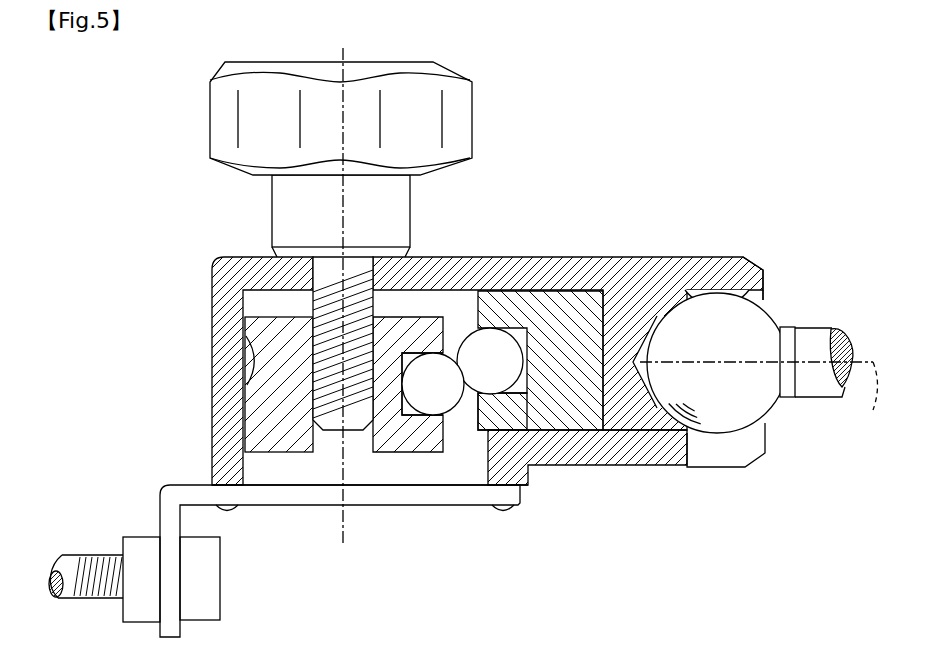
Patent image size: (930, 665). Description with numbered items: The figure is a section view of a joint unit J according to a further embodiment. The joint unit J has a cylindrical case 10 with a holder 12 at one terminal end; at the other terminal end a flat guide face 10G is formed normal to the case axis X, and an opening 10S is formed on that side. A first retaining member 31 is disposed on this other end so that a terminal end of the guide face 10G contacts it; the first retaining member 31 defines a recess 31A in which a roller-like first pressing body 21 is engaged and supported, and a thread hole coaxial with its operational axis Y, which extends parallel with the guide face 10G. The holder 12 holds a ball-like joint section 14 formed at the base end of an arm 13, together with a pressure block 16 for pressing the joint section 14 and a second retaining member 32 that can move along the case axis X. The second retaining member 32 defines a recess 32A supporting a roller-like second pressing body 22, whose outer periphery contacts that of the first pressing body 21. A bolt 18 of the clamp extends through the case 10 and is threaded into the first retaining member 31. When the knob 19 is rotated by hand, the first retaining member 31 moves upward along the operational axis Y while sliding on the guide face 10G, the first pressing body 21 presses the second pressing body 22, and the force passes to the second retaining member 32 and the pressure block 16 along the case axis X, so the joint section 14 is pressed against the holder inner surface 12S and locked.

The cylindrical case 10 is at (652, 272).
The flat guide face 10G is at (247, 343).
The opening 10S is at (288, 472).
The holder 12 is at (757, 266).
The holder inner surface 12S is at (687, 292).
The arm 13 is at (812, 342).
The ball-like joint section 14 is at (763, 398).
The pressure block 16 is at (632, 425).
The bolt 18 is at (327, 307).
The knob 19 is at (384, 155).
The first pressing body 21 is at (448, 405).
The second pressing body 22 is at (505, 412).
The first retaining member 31 is at (407, 333).
The recess 31A is at (428, 395).
The second retaining member 32 is at (493, 305).
The recess 32A is at (502, 338).
The case axis X is at (761, 404).
The operational axis Y is at (342, 310).
The joint unit J is at (465, 356).